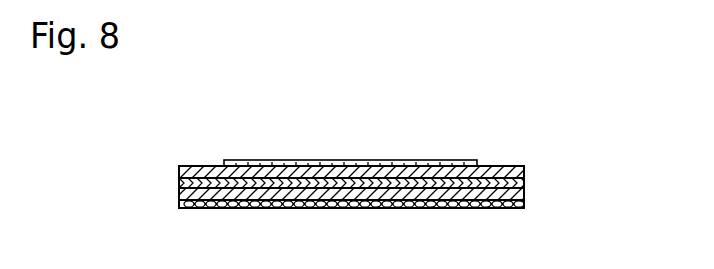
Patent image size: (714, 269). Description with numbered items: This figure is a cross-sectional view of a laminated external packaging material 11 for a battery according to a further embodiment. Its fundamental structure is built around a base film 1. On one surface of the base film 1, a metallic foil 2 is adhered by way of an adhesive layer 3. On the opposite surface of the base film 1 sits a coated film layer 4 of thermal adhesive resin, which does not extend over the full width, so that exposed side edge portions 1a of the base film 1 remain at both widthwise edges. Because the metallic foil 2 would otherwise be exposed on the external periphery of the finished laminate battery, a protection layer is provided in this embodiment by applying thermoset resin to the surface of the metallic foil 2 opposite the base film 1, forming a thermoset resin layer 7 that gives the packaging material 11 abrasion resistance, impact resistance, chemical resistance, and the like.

The base film 1 is at (512, 172).
The exposed side edge portion 1a is at (213, 167).
The metallic foil 2 is at (505, 192).
The adhesive layer 3 is at (510, 182).
The coated film layer 4 is at (308, 165).
The thermoset resin layer 7 is at (527, 203).
The laminated external packaging material 11 is at (428, 138).